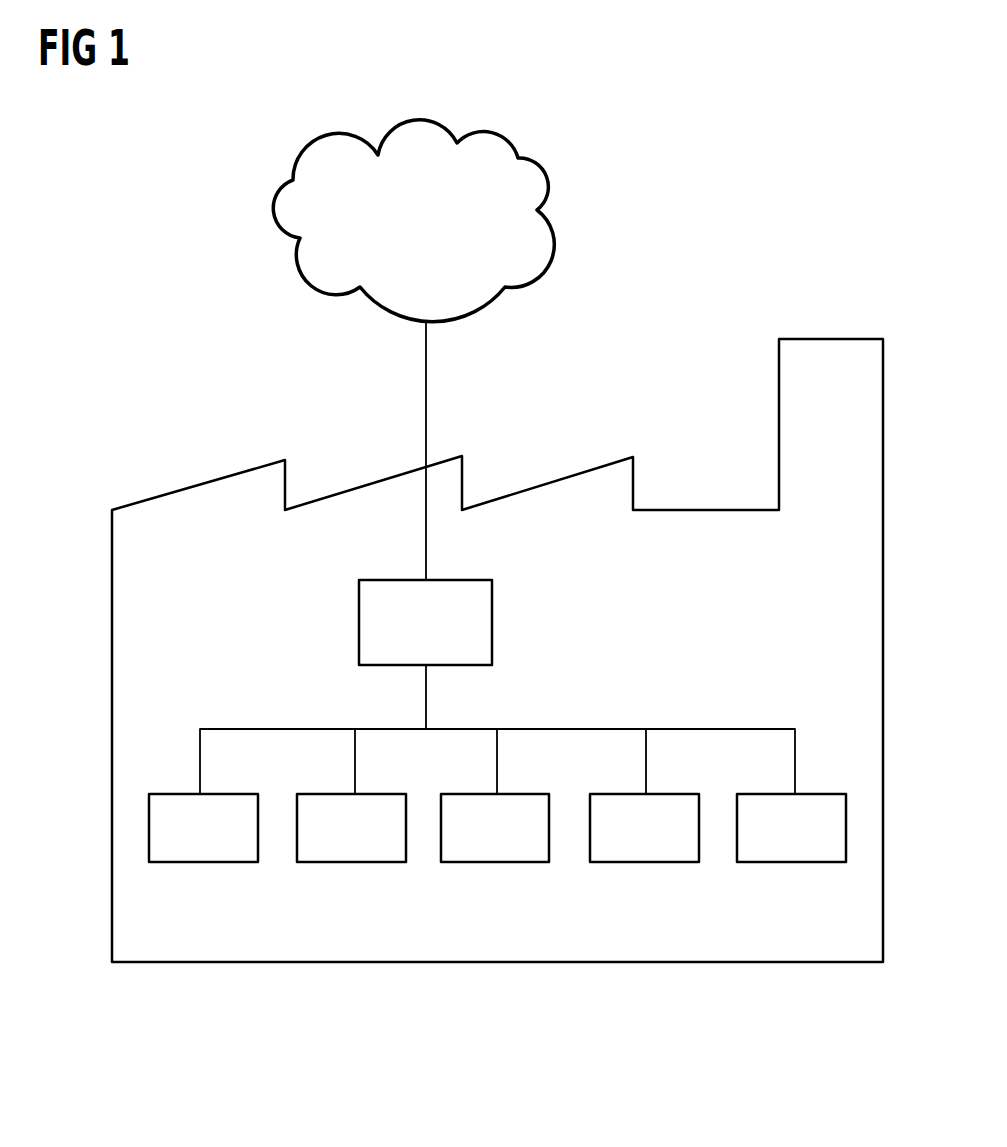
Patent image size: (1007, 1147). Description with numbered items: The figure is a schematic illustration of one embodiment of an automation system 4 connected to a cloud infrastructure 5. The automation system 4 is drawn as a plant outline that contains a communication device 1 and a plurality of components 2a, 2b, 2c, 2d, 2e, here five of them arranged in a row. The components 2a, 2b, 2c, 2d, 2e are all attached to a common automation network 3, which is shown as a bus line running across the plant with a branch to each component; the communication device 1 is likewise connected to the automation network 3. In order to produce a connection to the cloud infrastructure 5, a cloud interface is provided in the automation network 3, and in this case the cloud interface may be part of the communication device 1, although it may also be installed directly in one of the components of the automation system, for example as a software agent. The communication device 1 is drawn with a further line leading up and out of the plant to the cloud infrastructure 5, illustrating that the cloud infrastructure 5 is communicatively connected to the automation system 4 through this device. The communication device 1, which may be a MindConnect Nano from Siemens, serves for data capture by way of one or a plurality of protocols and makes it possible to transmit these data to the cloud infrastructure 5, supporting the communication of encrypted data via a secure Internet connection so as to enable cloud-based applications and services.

The communication device 1 is at (492, 622).
The component 2a is at (797, 863).
The component 2b is at (648, 863).
The component 2c is at (499, 863).
The component 2d is at (356, 863).
The component 2e is at (203, 863).
The automation network 3 is at (740, 728).
The automation system 4 is at (883, 718).
The cloud infrastructure 5 is at (555, 243).